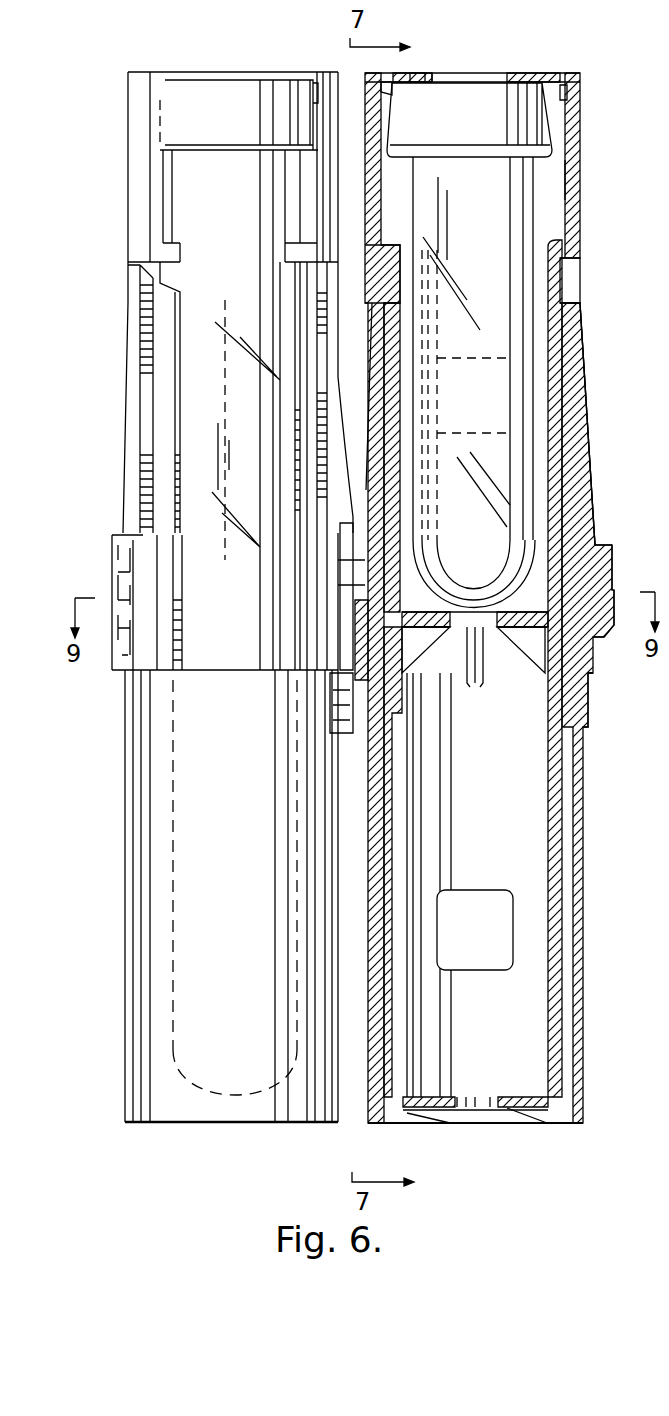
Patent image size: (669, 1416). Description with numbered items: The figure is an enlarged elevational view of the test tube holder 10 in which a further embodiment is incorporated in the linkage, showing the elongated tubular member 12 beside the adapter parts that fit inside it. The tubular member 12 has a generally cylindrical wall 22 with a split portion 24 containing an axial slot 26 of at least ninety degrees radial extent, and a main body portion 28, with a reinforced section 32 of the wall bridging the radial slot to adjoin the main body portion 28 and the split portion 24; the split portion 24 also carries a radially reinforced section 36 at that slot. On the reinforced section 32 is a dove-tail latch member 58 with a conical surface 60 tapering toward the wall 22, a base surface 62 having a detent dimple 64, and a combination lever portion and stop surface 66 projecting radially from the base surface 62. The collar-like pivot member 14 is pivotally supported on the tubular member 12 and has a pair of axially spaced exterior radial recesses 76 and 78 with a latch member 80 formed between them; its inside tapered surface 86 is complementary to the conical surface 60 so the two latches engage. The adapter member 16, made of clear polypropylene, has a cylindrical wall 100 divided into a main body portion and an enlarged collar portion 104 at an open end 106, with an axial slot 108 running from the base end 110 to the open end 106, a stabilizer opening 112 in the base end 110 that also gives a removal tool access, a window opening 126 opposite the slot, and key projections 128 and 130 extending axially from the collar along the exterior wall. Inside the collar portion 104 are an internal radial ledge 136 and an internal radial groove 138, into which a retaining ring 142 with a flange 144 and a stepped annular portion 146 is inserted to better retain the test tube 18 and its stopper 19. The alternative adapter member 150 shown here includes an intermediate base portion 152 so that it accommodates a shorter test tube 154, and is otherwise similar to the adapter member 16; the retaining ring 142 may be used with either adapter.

The test tube holder 10 is at (108, 47).
The tubular member 12 is at (140, 352).
The pivot member 14 is at (104, 545).
The adapter member 16 is at (142, 190).
The test tube 18 is at (250, 289).
The stopper 19 is at (208, 80).
The cylindrical wall 22 is at (575, 330).
The split portion 24 is at (586, 412).
The axial slot 26 is at (160, 460).
The main body portion 28 is at (584, 918).
The reinforced section 32 is at (343, 737).
The radially reinforced section 36 is at (150, 478).
The dove-tail latch member 58 is at (612, 630).
The conical surface 60 is at (355, 575).
The base surface 62 is at (612, 562).
The detent dimple 64 is at (614, 592).
The combination lever portion and stop surface 66 is at (598, 547).
The exterior radial recess 76 is at (150, 515).
The exterior radial recess 78 is at (586, 710).
The latch member 80 is at (112, 660).
The inside tapered surface 86 is at (355, 625).
The cylindrical wall 100 is at (562, 975).
The enlarged collar portion 104 is at (577, 168).
The open end 106 is at (478, 72).
The axial slot 108 is at (175, 328).
The base end 110 is at (525, 1112).
The stabilizer opening 112 is at (478, 1110).
The window opening 126 is at (490, 972).
The key projection 128 is at (374, 303).
The key projection 130 is at (572, 278).
The internal radial ledge 136 is at (180, 245).
The internal radial groove 138 is at (572, 88).
The retaining ring 142 is at (422, 64).
The flange 144 is at (386, 82).
The seat 146 is at (433, 72).
The adapter member 150 is at (574, 808).
The intermediate base portion 152 is at (512, 640).
The test tube 154 is at (498, 229).